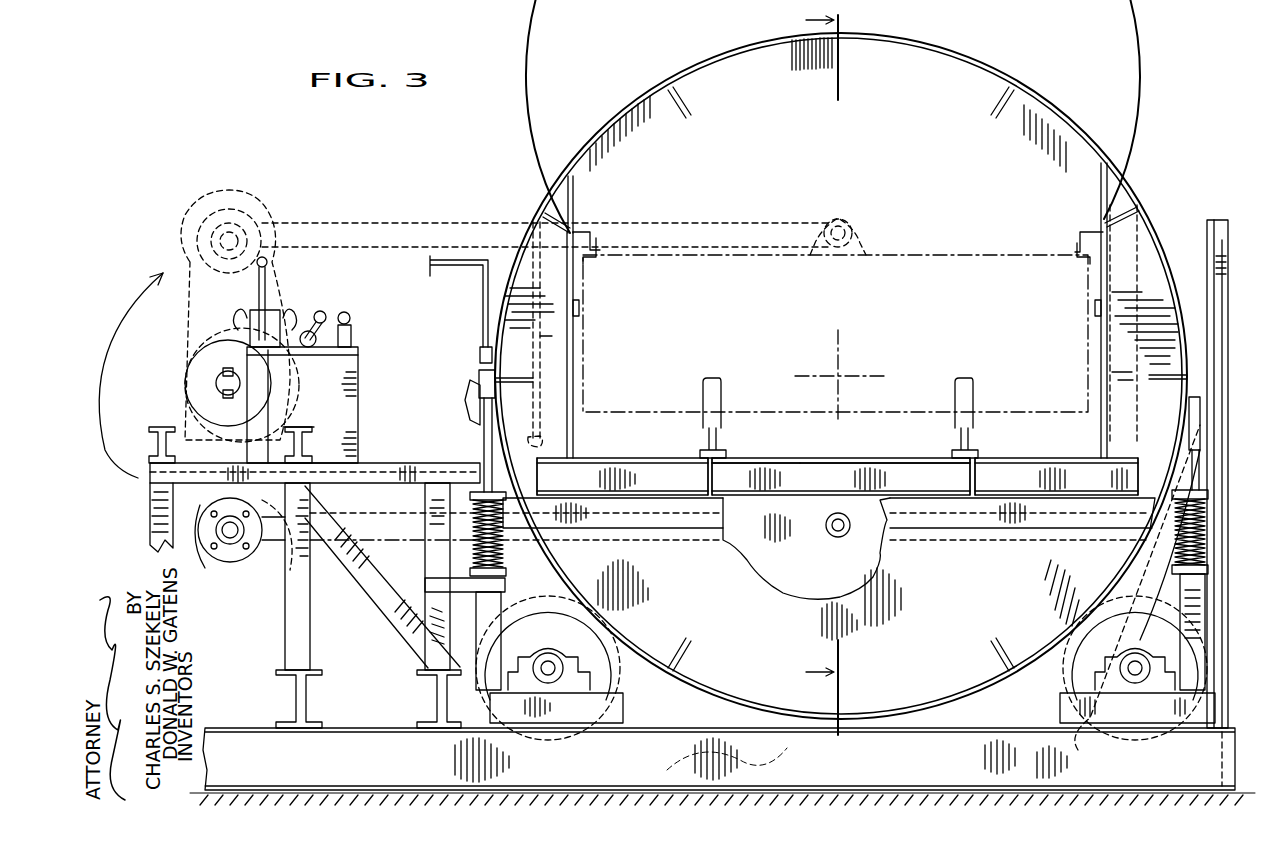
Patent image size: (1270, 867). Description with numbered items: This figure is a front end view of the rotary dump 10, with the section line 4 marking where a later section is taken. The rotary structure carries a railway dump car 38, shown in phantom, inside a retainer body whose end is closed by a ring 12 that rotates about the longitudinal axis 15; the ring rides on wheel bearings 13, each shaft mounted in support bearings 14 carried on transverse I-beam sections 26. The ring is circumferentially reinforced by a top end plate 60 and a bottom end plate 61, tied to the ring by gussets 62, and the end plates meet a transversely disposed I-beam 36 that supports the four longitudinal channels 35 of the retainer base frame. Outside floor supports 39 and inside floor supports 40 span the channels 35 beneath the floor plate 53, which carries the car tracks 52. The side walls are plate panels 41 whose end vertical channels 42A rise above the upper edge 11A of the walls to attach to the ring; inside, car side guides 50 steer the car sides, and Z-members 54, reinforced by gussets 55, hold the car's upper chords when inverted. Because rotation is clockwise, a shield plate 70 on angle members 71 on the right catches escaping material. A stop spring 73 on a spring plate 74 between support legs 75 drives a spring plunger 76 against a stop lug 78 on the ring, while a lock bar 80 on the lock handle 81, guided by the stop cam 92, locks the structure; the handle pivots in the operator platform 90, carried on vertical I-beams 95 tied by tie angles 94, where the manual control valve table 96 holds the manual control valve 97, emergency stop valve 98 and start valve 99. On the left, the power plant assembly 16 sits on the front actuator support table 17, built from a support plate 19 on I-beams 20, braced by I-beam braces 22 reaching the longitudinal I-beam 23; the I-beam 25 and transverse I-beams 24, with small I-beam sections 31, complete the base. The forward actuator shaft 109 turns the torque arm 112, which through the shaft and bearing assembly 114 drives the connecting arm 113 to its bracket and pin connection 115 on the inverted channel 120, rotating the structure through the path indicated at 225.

The section line 4— 4 is at (810, 372).
The rotary dump 10 is at (499, 133).
The upper edge of car retainer walls 11A is at (547, 216).
The ring 12 is at (1063, 118).
The wheel bearing 13 is at (610, 645).
The support bearing 14 is at (550, 655).
The longitudinal axis 15 is at (841, 374).
The power plant assembly 16 is at (176, 341).
The front actuator support table 17 is at (305, 427).
The rectangular support plate 19 is at (275, 463).
The longitudinally extending I-beam 20 is at (152, 445).
The I-beam brace 22 is at (365, 598).
The longitudinally extending I-beam 23 is at (437, 688).
The transversely extending I-beam 24 is at (871, 763).
The longitudinally extending I-beam 25 is at (307, 697).
The I-beam section 26 is at (622, 700).
The I-beam section 31 is at (1220, 742).
The channel 35 is at (540, 465).
The transversely disposed I-beam 36 is at (690, 520).
The railway dump car 38 is at (996, 255).
The outside floor support 39 is at (657, 470).
The inside I-beam floor support 40 is at (832, 460).
The plate panel 41 is at (574, 425).
The end vertical channel 42A is at (565, 445).
The car side guide 50 is at (579, 307).
The car track 52 is at (722, 436).
The floor plate 53 is at (780, 460).
The Z-member 54 is at (597, 240).
The gusset 55 is at (592, 238).
The top end plate 60 is at (906, 70).
The bottom end plate 61 is at (948, 609).
The gusset 62 is at (690, 110).
The shield plate 70 is at (1206, 236).
The angle member 71 is at (1224, 270).
The stop spring 73 is at (504, 540).
The spring plate 74 is at (506, 572).
The support leg 75 is at (500, 648).
The spring plunger 76 is at (484, 450).
The stop lug 78 is at (479, 380).
The lock bar 80 is at (480, 352).
The lock handle 81 is at (482, 290).
The operator platform 90 is at (407, 470).
The stop cam 92 is at (468, 405).
The tie angle 94 is at (506, 585).
The vertical I-beam 95 is at (150, 493).
The manual control valve table 96 is at (358, 370).
The manual control valve 97 is at (275, 318).
The emergency stop valve 98 is at (322, 312).
The start valve 99 is at (352, 335).
The forward actuator shaft 109 is at (222, 382).
The torque arm 112 is at (262, 212).
The connecting arm 113 is at (396, 223).
The shaft and shaft bearing assembly 114 is at (222, 545).
The bracket and pin connection 115 is at (853, 224).
The inverted channel 120 is at (800, 522).
The pivot arc 225 is at (125, 305).